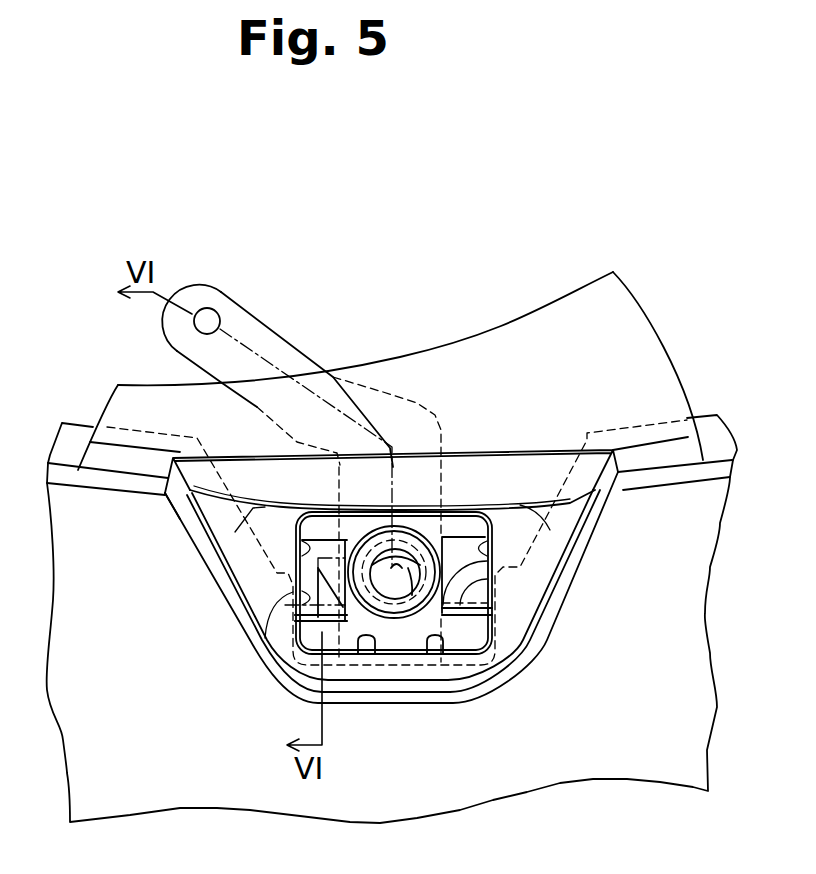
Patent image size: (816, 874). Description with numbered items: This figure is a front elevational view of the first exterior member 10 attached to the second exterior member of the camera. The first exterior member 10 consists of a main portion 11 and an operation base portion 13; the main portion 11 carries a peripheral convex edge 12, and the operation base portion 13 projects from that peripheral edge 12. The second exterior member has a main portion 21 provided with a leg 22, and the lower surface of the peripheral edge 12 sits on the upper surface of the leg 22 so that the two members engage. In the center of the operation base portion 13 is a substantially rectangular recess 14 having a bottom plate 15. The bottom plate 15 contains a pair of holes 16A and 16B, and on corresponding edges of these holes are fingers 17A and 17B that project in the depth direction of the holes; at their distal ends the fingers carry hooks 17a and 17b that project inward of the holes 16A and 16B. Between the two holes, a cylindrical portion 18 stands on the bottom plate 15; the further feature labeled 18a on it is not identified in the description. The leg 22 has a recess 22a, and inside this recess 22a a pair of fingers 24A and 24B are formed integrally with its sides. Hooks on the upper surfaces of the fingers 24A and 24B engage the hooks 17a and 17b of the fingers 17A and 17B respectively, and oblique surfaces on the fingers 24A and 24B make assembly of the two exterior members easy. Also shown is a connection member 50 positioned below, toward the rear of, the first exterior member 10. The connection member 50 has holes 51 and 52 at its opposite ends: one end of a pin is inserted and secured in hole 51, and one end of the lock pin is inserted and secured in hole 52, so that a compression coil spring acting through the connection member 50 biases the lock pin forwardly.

The first exterior member 10 is at (463, 337).
The main portion 11 is at (142, 395).
The peripheral edge 12 is at (115, 458).
The operation base portion 13 is at (717, 440).
The recess 14 is at (381, 655).
The bottom plate 15 is at (390, 652).
The hole 16A is at (297, 540).
The hole 16B is at (493, 540).
The hook 17a is at (262, 637).
The hook 17b is at (490, 597).
The finger 17A is at (355, 636).
The finger 17B is at (440, 640).
The cylindrical portion 18 is at (395, 526).
The bore of ring boss 18a is at (420, 560).
The main portion 21 is at (87, 770).
The leg 22 is at (73, 480).
The recess 22a is at (270, 668).
The finger 24A is at (318, 568).
The finger 24B is at (495, 573).
The connection member 50 is at (288, 338).
The hole 51 is at (433, 566).
The hole 52 is at (216, 312).